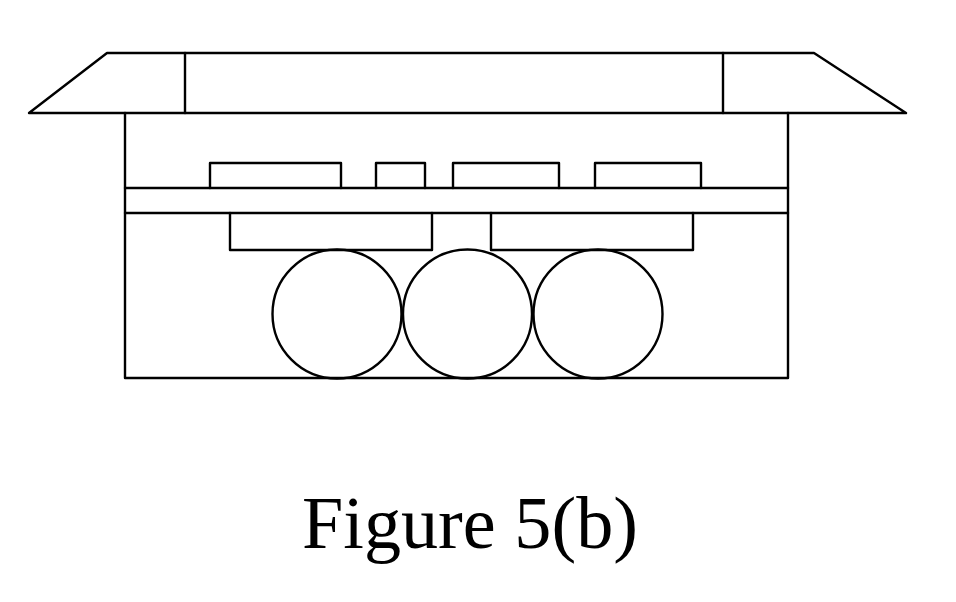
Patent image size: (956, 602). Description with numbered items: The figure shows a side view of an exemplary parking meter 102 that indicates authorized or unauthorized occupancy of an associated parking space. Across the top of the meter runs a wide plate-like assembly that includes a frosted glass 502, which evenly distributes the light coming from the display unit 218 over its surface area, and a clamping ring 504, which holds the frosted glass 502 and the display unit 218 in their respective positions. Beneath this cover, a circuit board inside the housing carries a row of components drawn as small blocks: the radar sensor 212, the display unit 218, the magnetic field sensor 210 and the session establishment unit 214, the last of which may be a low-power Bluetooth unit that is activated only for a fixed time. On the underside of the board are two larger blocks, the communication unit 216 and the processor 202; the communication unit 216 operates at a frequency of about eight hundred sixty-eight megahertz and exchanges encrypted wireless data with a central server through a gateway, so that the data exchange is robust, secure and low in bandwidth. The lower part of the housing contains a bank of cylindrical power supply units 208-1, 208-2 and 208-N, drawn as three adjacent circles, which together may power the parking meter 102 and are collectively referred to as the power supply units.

The parking meter 102 is at (408, 53).
The clamping ring 504 is at (135, 67).
The frosted glass 502 is at (627, 70).
The radar sensor 212 is at (242, 163).
The display unit 218 is at (400, 163).
The magnetic field sensor 210 is at (525, 163).
The session establishment unit 214 is at (638, 163).
The communication unit 216 is at (243, 250).
The processor 202 is at (669, 250).
The power supply unit 208-1 is at (328, 365).
The power supply unit 208-2 is at (462, 364).
The power supply unit 208-N is at (592, 363).